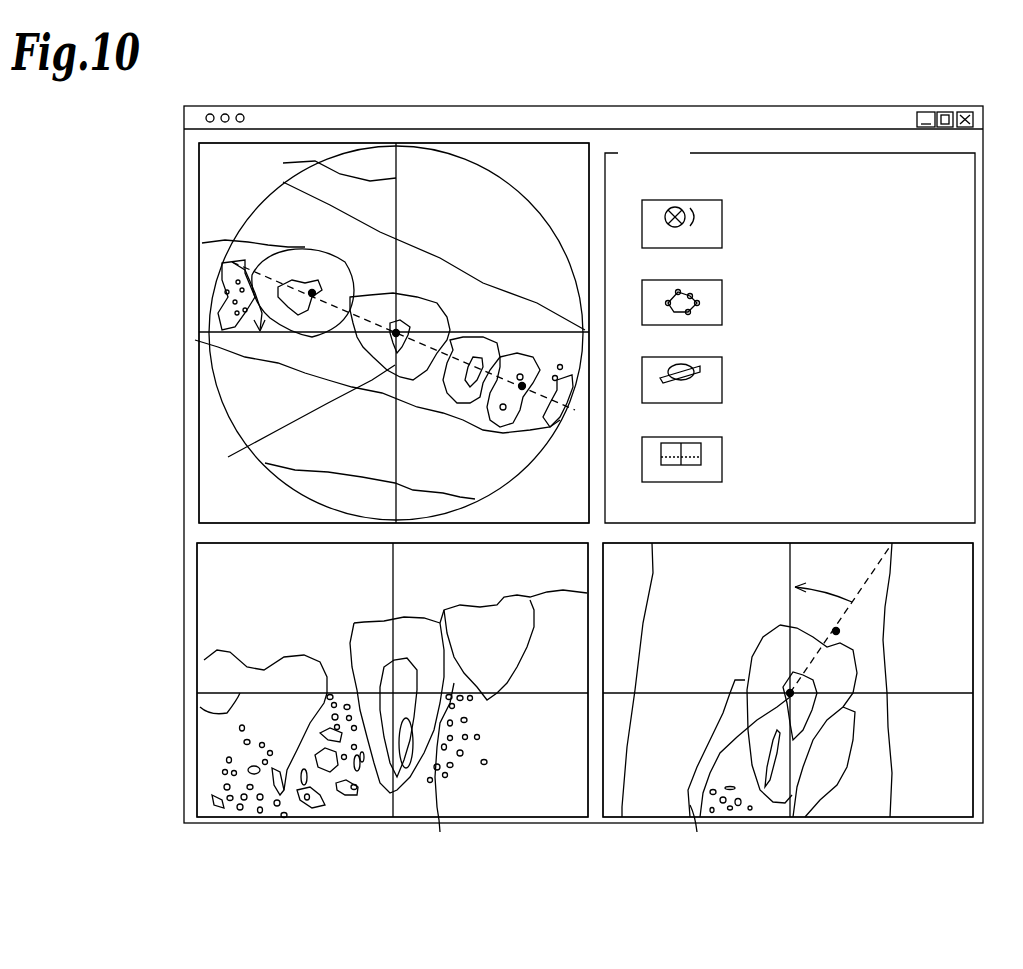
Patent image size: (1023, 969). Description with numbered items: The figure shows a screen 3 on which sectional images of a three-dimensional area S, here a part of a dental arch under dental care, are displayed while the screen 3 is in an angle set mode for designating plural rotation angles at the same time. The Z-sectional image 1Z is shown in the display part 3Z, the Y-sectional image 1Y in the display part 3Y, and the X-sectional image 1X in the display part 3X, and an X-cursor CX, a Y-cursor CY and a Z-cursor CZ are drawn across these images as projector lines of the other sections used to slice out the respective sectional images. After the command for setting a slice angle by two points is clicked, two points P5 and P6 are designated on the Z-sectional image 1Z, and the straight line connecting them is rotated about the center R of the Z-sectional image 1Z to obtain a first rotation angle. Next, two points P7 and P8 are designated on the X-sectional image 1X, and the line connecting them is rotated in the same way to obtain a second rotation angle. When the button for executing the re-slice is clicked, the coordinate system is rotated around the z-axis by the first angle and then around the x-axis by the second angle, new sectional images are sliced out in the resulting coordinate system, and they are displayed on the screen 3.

The screen 3 is at (748, 107).
The Z-sectional image 1Z is at (553, 160).
The display part 3Z is at (553, 160).
The Y-sectional image 1Y is at (524, 793).
The display part 3Y is at (524, 793).
The X-sectional image 1X is at (627, 805).
The display part 3X is at (627, 805).
The three-dimensional area S is at (450, 257).
The center of the Z-sectional image R is at (459, 617).
The X-cursor CX is at (305, 163).
The Y-cursor CY is at (520, 332).
The Z-cursor CZ is at (199, 720).
The point P5 is at (312, 293).
The point P6 is at (522, 386).
The point P7 is at (836, 631).
The point P8 is at (790, 693).